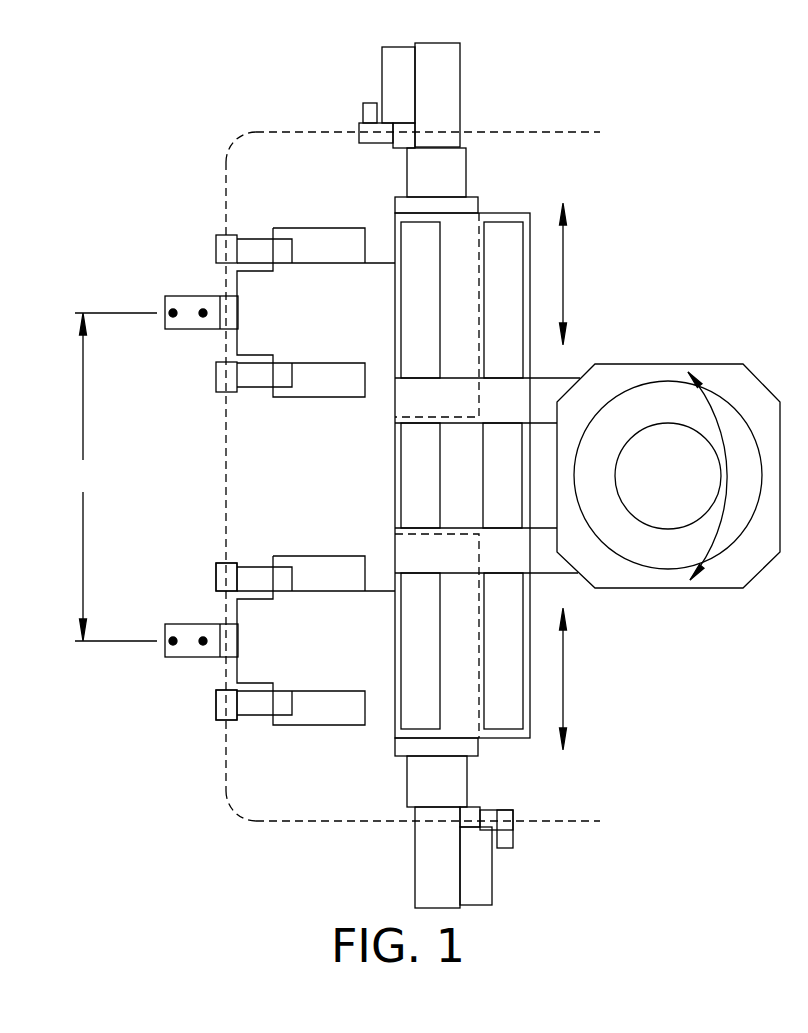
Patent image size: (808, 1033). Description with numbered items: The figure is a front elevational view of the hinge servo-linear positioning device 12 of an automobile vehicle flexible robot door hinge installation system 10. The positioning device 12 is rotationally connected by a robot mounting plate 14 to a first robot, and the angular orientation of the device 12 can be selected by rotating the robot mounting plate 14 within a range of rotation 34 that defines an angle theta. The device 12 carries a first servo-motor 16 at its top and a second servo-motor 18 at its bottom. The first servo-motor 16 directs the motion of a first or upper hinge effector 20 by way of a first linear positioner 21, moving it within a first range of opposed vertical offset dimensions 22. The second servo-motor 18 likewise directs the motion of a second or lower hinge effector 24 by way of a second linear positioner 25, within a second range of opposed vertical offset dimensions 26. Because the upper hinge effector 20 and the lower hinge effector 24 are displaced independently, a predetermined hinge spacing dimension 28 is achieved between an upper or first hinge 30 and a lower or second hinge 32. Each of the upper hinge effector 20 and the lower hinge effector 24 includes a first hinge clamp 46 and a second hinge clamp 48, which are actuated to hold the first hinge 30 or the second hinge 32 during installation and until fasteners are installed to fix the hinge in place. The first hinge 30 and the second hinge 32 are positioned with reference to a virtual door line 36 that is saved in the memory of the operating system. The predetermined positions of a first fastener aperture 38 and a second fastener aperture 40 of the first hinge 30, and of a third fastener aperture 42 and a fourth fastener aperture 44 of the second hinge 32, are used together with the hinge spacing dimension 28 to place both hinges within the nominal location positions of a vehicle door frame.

The automobile vehicle flexible robot door hinge installation system 10 is at (207, 107).
The hinge servo-linear positioning device 12 is at (518, 365).
The robot mounting plate 14 is at (617, 575).
The first servo-motor 16 is at (390, 76).
The second servo-motor 18 is at (485, 871).
The first or upper hinge effector 20 is at (333, 383).
The first linear positioner 21 is at (470, 205).
The first range of opposed vertical offset dimensions 22 is at (565, 243).
The second or lower hinge effector 24 is at (337, 712).
The second linear positioner 25 is at (472, 750).
The second range of opposed vertical offset dimensions 26 is at (565, 712).
The hinge spacing dimension 28 is at (83, 313).
The first hinge 30 is at (192, 322).
The second hinge 32 is at (192, 650).
The range of rotation 34 is at (713, 418).
The virtual door line 36 is at (222, 492).
The first fastener aperture 38 is at (170, 311).
The second fastener aperture 40 is at (203, 311).
The third fastener aperture 42 is at (170, 638).
The fourth fastener aperture 44 is at (203, 639).
The first hinge clamp 46 is at (220, 575).
The second hinge clamp 48 is at (220, 703).